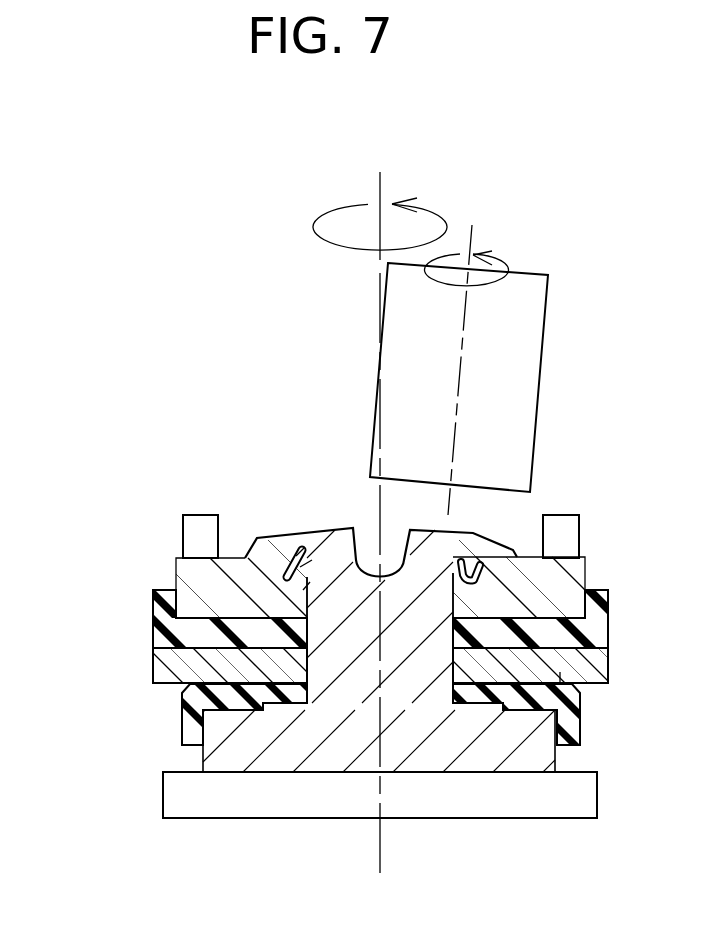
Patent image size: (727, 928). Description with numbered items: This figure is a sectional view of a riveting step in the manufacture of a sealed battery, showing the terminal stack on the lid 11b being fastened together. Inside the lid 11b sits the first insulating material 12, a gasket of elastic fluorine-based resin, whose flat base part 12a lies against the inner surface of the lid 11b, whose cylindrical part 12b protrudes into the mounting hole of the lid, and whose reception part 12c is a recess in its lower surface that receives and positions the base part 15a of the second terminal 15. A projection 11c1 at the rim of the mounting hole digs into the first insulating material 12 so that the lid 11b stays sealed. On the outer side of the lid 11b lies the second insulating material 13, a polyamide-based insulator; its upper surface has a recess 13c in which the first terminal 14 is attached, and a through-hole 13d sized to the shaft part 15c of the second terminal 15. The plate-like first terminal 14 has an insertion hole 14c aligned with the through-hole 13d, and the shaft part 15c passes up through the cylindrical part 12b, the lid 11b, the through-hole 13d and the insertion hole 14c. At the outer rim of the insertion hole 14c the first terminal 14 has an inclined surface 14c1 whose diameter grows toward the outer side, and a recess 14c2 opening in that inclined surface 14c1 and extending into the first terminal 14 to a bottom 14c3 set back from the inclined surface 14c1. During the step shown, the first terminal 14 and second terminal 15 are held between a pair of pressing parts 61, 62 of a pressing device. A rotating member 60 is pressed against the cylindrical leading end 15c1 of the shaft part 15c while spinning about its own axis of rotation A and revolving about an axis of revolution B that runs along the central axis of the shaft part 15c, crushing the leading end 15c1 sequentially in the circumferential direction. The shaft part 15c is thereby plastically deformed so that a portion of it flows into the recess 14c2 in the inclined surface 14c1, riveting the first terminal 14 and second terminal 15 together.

The axis of rotation A is at (474, 233).
The axis of revolution B is at (382, 184).
The rotating member 60 is at (541, 343).
The first terminal 14 is at (160, 544).
The insertion hole 14c is at (306, 596).
The inclined surface 14c1 is at (293, 566).
The recess 14c2 is at (300, 555).
The bottom 14c3 is at (303, 590).
The pressing part 61 is at (187, 513).
The second insulating material 13 is at (125, 628).
The recess 13c is at (557, 612).
The through-hole 13d is at (345, 625).
The lid 11b is at (133, 672).
The projection 11c1 is at (477, 690).
The first insulating material 12 is at (160, 727).
The base part 12a is at (560, 672).
The cylindrical part 12b is at (287, 657).
The reception part 12c is at (557, 750).
The second terminal 15 is at (178, 760).
The base part 15a is at (550, 745).
The shaft part 15c is at (455, 597).
The leading end 15c1 is at (467, 532).
The pressing part 62 is at (590, 820).